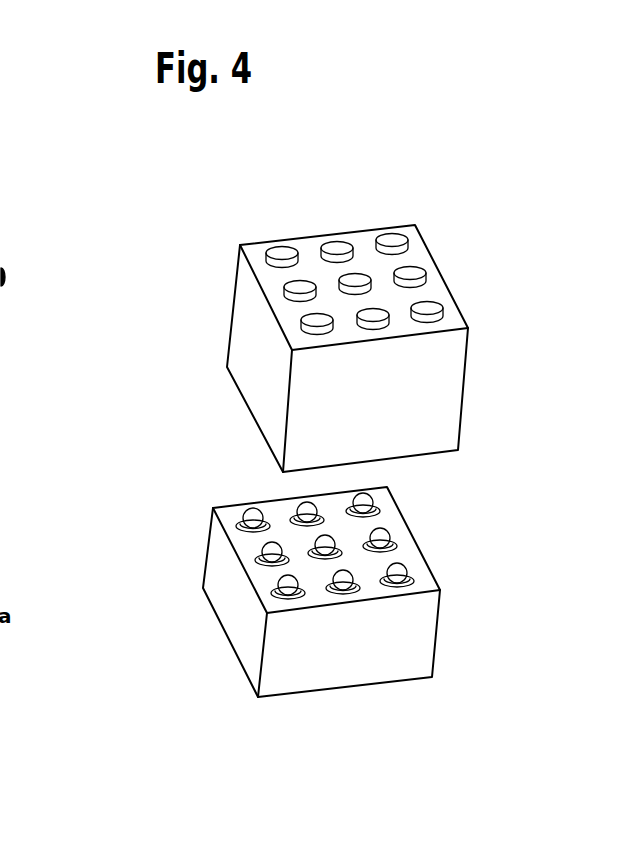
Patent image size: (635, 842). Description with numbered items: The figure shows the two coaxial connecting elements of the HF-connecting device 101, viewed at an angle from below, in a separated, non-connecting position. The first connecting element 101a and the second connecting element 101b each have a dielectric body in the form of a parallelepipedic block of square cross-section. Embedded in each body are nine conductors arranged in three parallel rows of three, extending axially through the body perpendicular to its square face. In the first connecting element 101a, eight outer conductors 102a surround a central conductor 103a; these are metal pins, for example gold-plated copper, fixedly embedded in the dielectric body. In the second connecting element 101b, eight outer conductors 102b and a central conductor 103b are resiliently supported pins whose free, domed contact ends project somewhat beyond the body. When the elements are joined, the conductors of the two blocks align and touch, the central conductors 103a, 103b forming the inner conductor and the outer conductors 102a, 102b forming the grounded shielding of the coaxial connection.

The HF-connecting device 101 is at (463, 171).
The first connecting element 101a is at (455, 378).
The second connecting element 101b is at (425, 638).
The outer conductors 102a is at (397, 235).
The outer conductors 102b is at (365, 502).
The central conductor 103a is at (355, 278).
The central conductor 103b is at (323, 542).